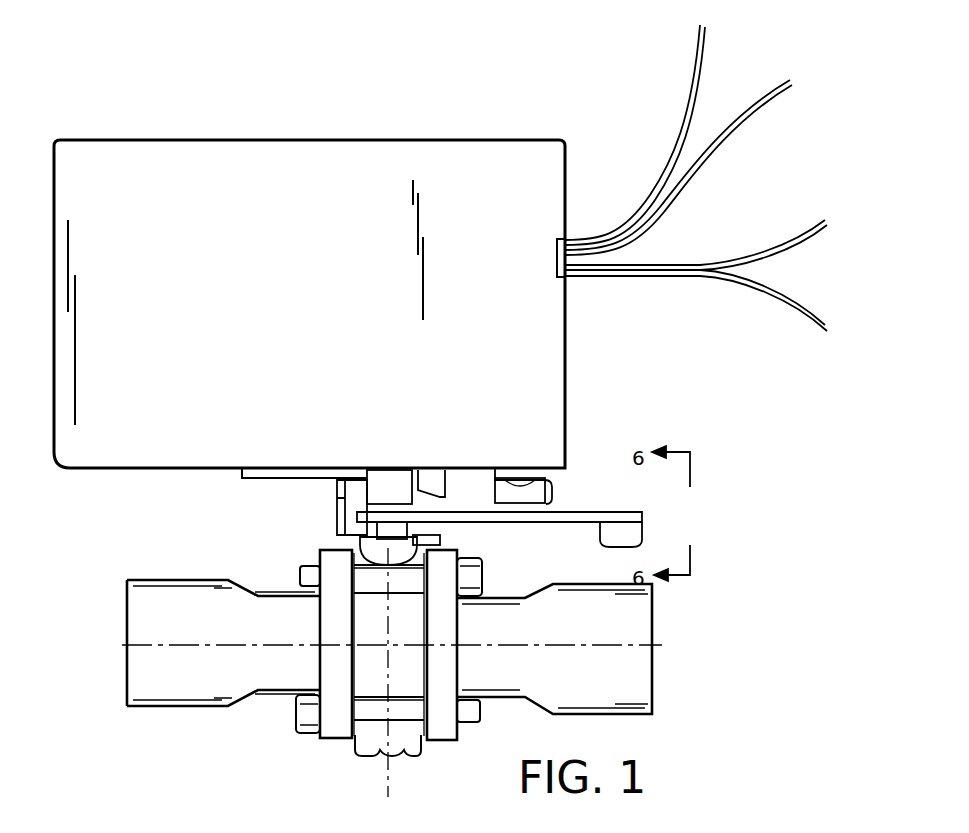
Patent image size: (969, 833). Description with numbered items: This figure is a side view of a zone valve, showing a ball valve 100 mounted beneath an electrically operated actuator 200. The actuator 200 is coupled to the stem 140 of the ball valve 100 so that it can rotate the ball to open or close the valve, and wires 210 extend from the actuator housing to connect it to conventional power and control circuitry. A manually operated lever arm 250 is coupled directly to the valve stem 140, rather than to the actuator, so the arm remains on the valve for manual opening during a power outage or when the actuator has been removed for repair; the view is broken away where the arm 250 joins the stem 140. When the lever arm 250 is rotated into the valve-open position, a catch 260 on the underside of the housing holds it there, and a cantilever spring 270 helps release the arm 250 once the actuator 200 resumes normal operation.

The ball valve 100 is at (649, 732).
The actuator 200 is at (537, 393).
The wires 210 is at (745, 92).
The stem 140 is at (340, 528).
The cantilever spring 270 is at (555, 492).
The catch 260 is at (553, 497).
The lever arm 250 is at (632, 532).